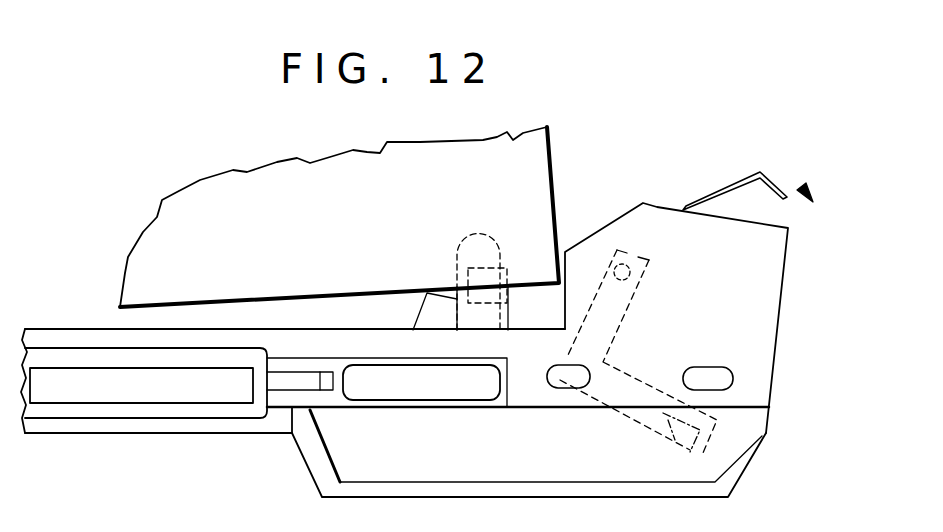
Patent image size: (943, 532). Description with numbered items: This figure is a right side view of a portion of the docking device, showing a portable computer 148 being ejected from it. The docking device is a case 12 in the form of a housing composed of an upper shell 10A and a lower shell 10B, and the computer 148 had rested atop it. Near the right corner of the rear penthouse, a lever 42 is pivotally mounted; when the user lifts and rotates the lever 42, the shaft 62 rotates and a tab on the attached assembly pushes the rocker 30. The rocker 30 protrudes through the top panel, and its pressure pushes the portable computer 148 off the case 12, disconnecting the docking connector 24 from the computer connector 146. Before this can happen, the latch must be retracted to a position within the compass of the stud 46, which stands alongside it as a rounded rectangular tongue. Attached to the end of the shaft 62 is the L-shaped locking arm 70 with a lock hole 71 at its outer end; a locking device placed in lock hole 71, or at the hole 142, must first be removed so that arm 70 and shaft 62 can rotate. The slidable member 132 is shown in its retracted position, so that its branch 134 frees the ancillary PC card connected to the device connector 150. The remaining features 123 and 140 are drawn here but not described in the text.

The case 12 is at (802, 186).
The upper shell 10A is at (788, 252).
The lower shell 10B is at (750, 477).
The portable computer 148 is at (185, 207).
The stud 46 is at (467, 237).
The computer connector 146 is at (480, 270).
The docking connector 24 is at (510, 313).
The rocker 30 is at (423, 305).
The locking arm 70 is at (625, 252).
The shaft 62 is at (632, 262).
The lock hole 71 is at (695, 427).
The lever 42 is at (763, 177).
The slot 123 is at (707, 388).
The hole 142 is at (545, 367).
The spring 140 is at (480, 390).
The branch 134 is at (293, 390).
The member 132 is at (333, 390).
The connector 150 is at (113, 398).